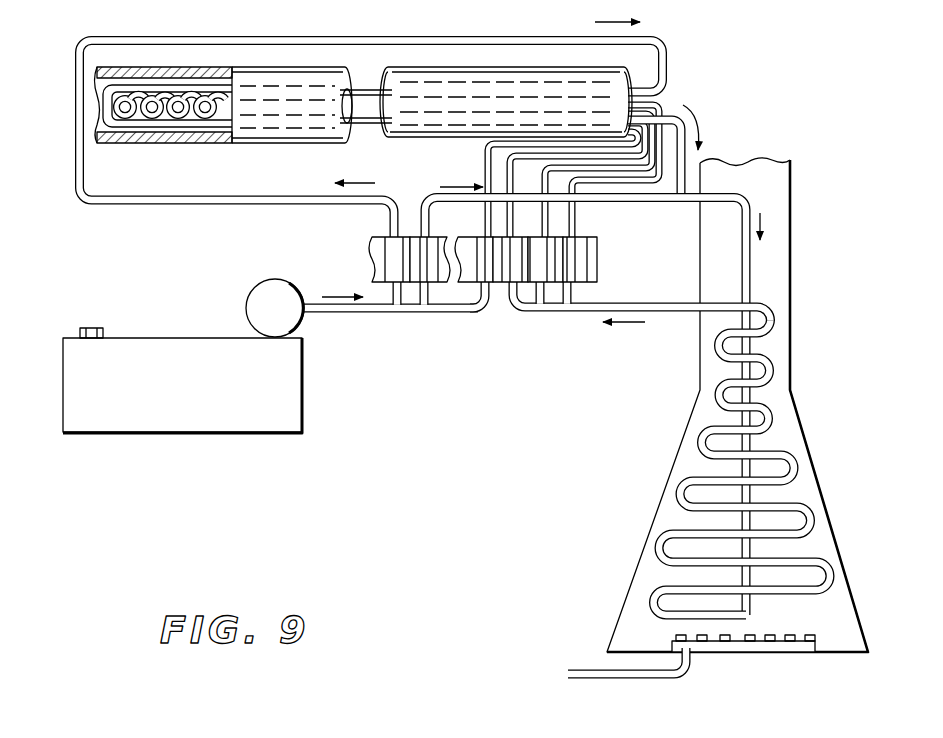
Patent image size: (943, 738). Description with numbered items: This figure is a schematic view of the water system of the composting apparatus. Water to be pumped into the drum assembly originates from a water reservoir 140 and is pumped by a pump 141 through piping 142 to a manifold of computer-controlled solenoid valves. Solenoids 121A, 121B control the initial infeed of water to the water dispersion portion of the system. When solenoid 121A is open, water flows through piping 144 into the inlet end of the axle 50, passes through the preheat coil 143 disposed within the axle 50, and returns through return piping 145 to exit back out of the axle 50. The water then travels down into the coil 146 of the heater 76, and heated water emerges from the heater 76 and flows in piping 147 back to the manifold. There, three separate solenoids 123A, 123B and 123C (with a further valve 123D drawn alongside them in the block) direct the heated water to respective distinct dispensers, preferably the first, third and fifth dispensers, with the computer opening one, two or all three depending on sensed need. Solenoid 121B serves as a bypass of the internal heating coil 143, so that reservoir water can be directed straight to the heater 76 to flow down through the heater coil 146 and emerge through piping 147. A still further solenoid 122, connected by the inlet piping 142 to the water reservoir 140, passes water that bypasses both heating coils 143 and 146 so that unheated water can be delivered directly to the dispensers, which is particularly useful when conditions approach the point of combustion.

The piping 144 is at (327, 8).
The preheat coil 143 is at (160, 90).
The axle 50 is at (252, 76).
The return piping 145 is at (677, 95).
The solenoid 121A is at (378, 240).
The solenoid 121B is at (378, 258).
The pump 141 is at (248, 300).
The water reservoir 140 is at (180, 343).
The piping 142 is at (350, 314).
The solenoid 122 is at (490, 318).
The solenoid 123A is at (483, 268).
The solenoid 123B is at (510, 268).
The solenoid 123C is at (535, 268).
The valve 123D is at (565, 268).
The piping 147 is at (668, 302).
The heater 76 is at (782, 366).
The heater coil 146 is at (803, 476).